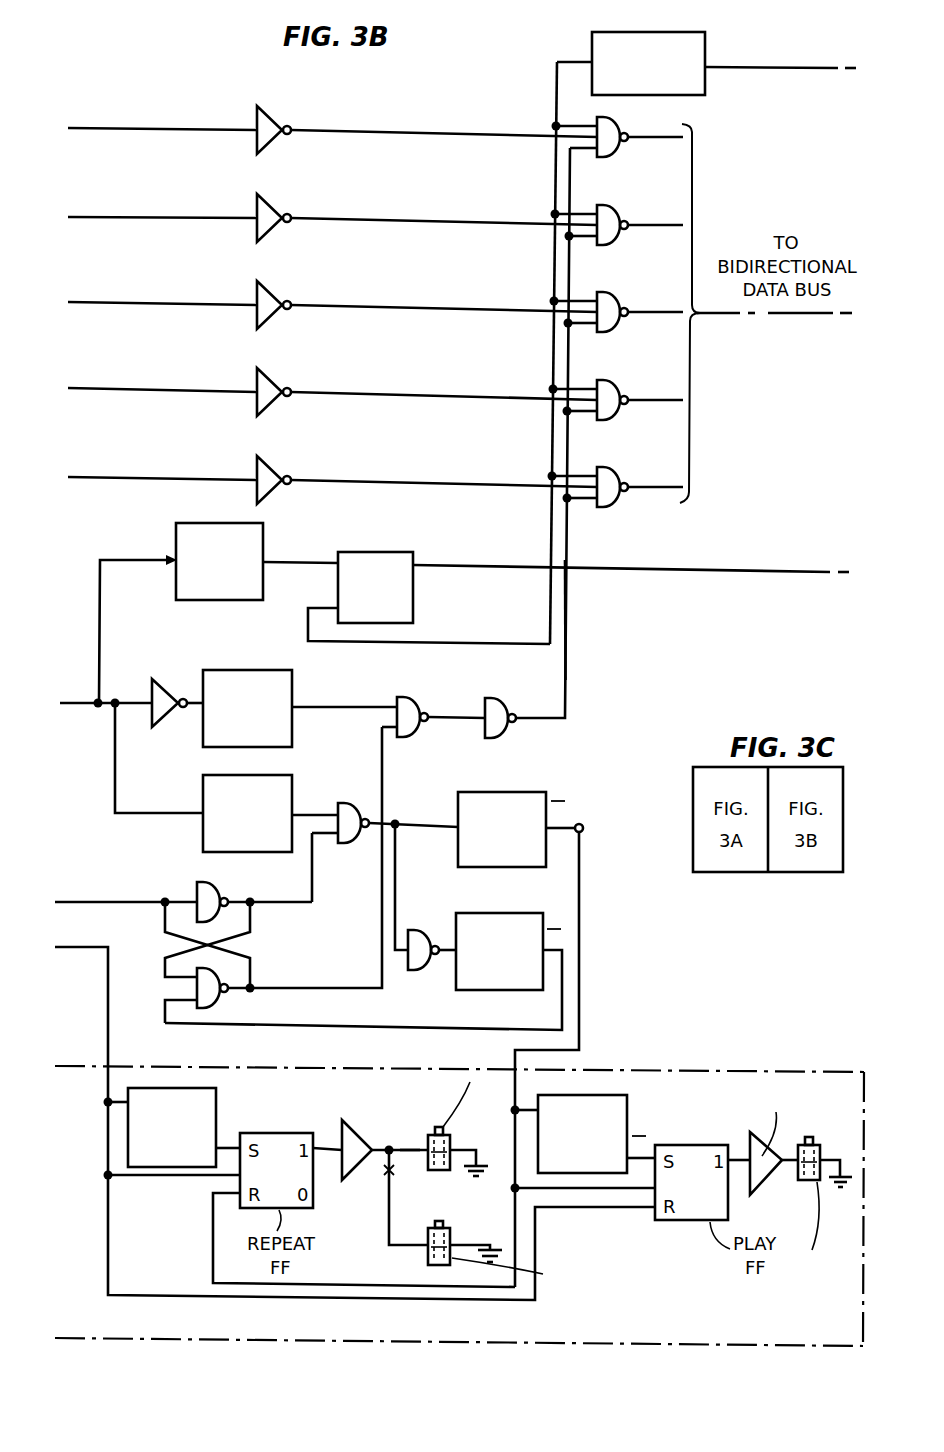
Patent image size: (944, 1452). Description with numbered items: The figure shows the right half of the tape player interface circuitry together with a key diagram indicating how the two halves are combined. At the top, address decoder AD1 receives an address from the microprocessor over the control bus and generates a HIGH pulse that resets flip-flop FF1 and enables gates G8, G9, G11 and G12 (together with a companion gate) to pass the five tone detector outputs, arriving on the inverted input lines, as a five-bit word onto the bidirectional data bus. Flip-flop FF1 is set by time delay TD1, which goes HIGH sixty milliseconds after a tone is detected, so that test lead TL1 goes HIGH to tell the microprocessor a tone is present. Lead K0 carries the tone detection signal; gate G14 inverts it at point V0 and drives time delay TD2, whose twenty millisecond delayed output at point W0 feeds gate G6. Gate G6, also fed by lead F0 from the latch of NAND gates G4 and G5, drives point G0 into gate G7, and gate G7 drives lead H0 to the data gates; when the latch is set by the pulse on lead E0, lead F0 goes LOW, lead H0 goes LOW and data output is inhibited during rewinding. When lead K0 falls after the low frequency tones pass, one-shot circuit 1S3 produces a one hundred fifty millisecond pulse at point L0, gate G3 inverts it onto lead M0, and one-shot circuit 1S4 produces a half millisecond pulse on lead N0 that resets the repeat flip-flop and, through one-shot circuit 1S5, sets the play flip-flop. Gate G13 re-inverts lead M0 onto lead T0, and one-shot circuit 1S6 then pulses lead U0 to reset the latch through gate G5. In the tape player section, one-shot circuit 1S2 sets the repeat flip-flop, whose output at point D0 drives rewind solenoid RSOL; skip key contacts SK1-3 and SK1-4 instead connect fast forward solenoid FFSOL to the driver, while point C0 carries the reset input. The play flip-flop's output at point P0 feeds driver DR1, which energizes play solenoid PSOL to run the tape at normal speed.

The address decoder AD1 is at (592, 36).
The gate G8 is at (618, 152).
The gate G9 is at (618, 240).
The gate G11 is at (618, 415).
The gate G12 is at (618, 502).
The time delay TD1 is at (190, 523).
The flip-flop FF1 is at (413, 592).
The test lead TL1 is at (790, 577).
The lead H0 is at (565, 622).
The lead K0 is at (128, 696).
The point V0 is at (193, 692).
The time delay TD2 is at (247, 670).
The point W0 is at (341, 705).
The gate G6 is at (410, 700).
The point G0 is at (460, 714).
The gate G7 is at (508, 703).
The gate G14 is at (166, 718).
The one-shot circuit 1S3 is at (203, 831).
The point L0 is at (322, 812).
The lead M0 is at (397, 818).
The gate G3 is at (352, 846).
The one-shot circuit 1S4 is at (520, 790).
The lead N0 is at (583, 826).
The gate G13 is at (420, 930).
The lead T0 is at (444, 958).
The one-shot circuit 1S6 is at (515, 913).
The lead U0 is at (350, 1031).
The lead E0 is at (74, 899).
The point C0 is at (74, 944).
The NAND gate G4 is at (218, 884).
The NAND gate G5 is at (216, 1001).
The lead F0 is at (298, 993).
The one-shot circuit 1S2 is at (216, 1102).
The point D0 is at (322, 1145).
The contact SK1-4 is at (405, 1160).
The contact SK1-3 is at (396, 1170).
The rewind solenoid RSOL is at (450, 1146).
The fast forward solenoid FFSOL is at (430, 1259).
The one-shot circuit 1S5 is at (627, 1113).
The point P0 is at (737, 1152).
The driver DR1 is at (769, 1178).
The play solenoid PSOL is at (809, 1137).